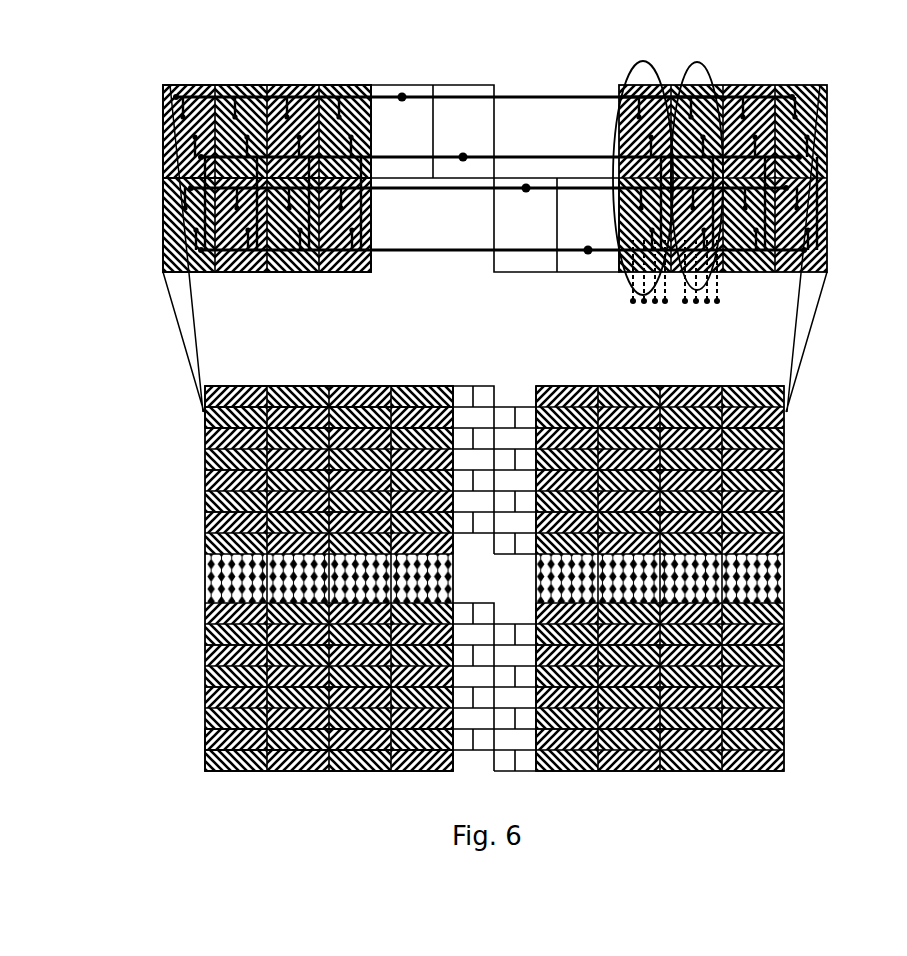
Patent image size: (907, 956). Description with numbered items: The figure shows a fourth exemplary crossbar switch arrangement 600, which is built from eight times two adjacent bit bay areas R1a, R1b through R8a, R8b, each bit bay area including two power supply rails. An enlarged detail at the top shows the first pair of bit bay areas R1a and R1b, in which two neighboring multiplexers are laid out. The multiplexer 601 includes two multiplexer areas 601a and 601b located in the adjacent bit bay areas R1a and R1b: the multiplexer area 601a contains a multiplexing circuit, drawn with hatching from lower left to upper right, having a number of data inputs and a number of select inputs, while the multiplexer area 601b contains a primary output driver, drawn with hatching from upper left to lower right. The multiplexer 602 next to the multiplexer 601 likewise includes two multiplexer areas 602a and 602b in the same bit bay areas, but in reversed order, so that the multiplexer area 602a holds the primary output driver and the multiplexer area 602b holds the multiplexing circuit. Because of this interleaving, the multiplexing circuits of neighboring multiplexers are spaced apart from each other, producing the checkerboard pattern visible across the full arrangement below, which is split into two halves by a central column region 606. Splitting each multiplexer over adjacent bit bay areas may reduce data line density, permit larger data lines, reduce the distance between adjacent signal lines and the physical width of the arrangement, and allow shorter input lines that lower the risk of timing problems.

The crossbar switch arrangement 600 is at (832, 776).
The multiplexer 601 is at (650, 62).
The multiplexer area 601a is at (640, 108).
The multiplexer area 601b is at (623, 262).
The multiplexer 602 is at (712, 73).
The multiplexer area 602a is at (757, 95).
The multiplexer area 602b is at (722, 260).
The center column region 606 is at (463, 397).
The bit bay area R1a is at (205, 394).
The bit bay area R1b is at (205, 435).
The bit bay area R8a is at (205, 739).
The bit bay area R8b is at (205, 760).